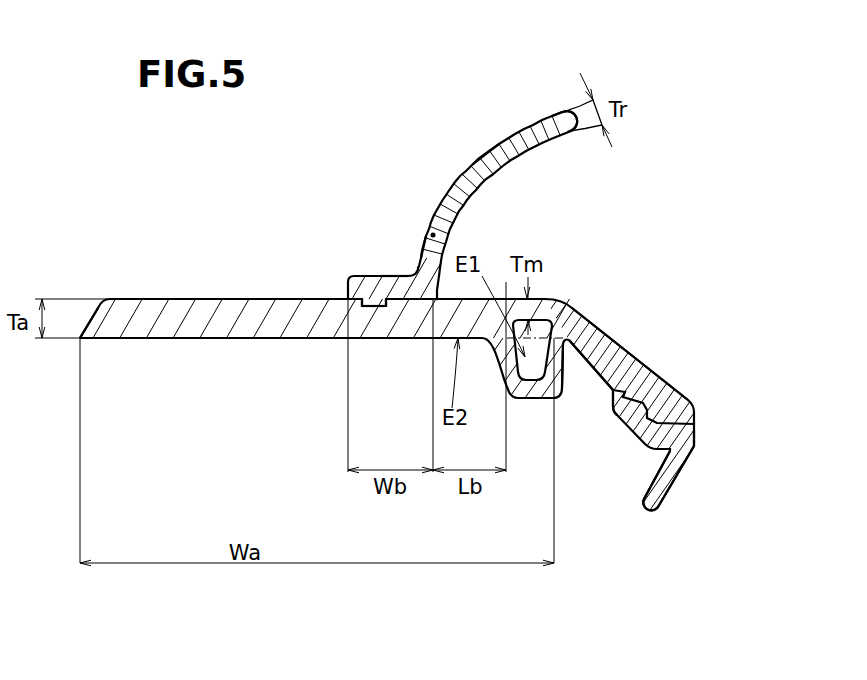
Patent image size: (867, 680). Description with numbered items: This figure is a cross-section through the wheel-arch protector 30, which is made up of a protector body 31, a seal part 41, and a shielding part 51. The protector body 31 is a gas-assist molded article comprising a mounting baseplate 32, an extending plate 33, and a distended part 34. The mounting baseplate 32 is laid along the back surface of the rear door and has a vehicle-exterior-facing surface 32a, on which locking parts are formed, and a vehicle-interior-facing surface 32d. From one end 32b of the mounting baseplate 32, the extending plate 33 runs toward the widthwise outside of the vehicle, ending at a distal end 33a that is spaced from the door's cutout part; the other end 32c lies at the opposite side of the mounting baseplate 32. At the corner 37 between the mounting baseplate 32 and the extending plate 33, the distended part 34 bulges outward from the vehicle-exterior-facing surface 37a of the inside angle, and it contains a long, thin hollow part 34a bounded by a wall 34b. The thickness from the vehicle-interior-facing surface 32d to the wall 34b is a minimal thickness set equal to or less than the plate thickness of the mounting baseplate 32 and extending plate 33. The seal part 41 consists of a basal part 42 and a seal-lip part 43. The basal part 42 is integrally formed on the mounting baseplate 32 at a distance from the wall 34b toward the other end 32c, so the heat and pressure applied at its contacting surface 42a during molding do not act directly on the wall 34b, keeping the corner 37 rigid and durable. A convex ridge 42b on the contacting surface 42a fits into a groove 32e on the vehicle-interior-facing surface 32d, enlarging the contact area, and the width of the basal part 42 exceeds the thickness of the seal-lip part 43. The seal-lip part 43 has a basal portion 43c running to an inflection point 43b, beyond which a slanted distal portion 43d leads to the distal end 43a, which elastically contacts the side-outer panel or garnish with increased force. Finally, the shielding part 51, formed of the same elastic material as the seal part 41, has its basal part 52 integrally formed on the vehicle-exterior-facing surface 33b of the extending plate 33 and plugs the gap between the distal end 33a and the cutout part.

The wheel-arch protector 30 is at (56, 203).
The protector body 31 is at (675, 558).
The mounting baseplate 32 is at (437, 300).
The vehicle-exterior-facing surface 32a is at (213, 338).
The end 32b is at (543, 299).
The other end 32c is at (80, 338).
The vehicle-interior-facing surface 32d is at (223, 299).
The groove 32e is at (370, 307).
The extending plate 33 is at (587, 362).
The distal end 33a is at (686, 412).
The vehicle-exterior-facing surface 33b is at (615, 390).
The distended part 34 is at (528, 400).
The hollow part 34a is at (513, 320).
The wall 34b is at (567, 327).
The corner 37 is at (608, 327).
The vehicle-exterior-facing surface 37a is at (568, 329).
The seal part 41 is at (521, 124).
The basal part 42 is at (352, 282).
The contacting surface 42a is at (396, 298).
The convex ridge 42b is at (362, 307).
The seal-lip part 43 is at (461, 71).
The distal end 43a is at (553, 125).
The inflection point 43b is at (428, 243).
The basal portion 43c is at (417, 242).
The distal portion 43d is at (487, 167).
The shielding part 51 is at (687, 480).
The basal part 52 is at (684, 441).